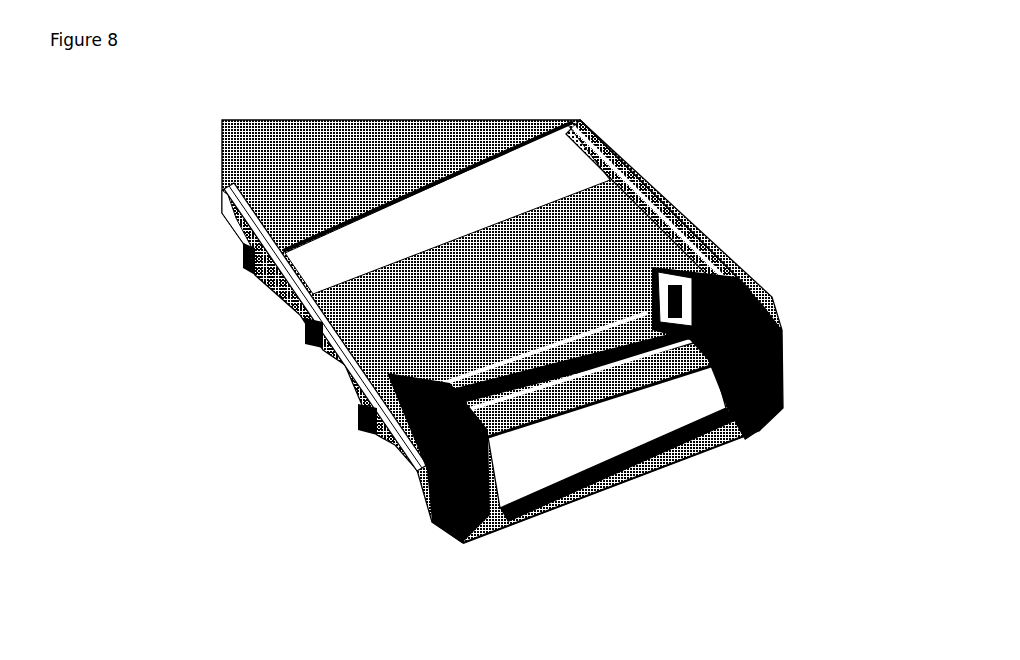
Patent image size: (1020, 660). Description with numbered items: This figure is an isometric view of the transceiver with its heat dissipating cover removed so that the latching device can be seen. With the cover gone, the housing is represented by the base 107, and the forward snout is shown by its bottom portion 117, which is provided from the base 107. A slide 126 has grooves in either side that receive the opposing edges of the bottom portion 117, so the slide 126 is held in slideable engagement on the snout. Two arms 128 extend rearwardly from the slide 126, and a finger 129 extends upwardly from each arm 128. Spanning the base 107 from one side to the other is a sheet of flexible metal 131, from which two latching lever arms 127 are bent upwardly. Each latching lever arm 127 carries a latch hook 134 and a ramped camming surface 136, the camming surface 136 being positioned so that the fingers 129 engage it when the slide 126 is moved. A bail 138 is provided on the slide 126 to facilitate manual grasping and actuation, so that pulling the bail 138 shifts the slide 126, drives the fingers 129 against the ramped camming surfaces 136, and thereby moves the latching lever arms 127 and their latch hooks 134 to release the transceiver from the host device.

The base 107 is at (263, 287).
The bottom portion 117 is at (653, 413).
The slide 126 is at (450, 527).
The latching lever arm 127 is at (655, 235).
The arm 128 is at (752, 299).
The finger 129 is at (372, 374).
The sheet of flexible metal 131 is at (585, 232).
The latch hook 134 is at (363, 428).
The ramped camming surface 136 is at (705, 265).
The bail 138 is at (586, 403).